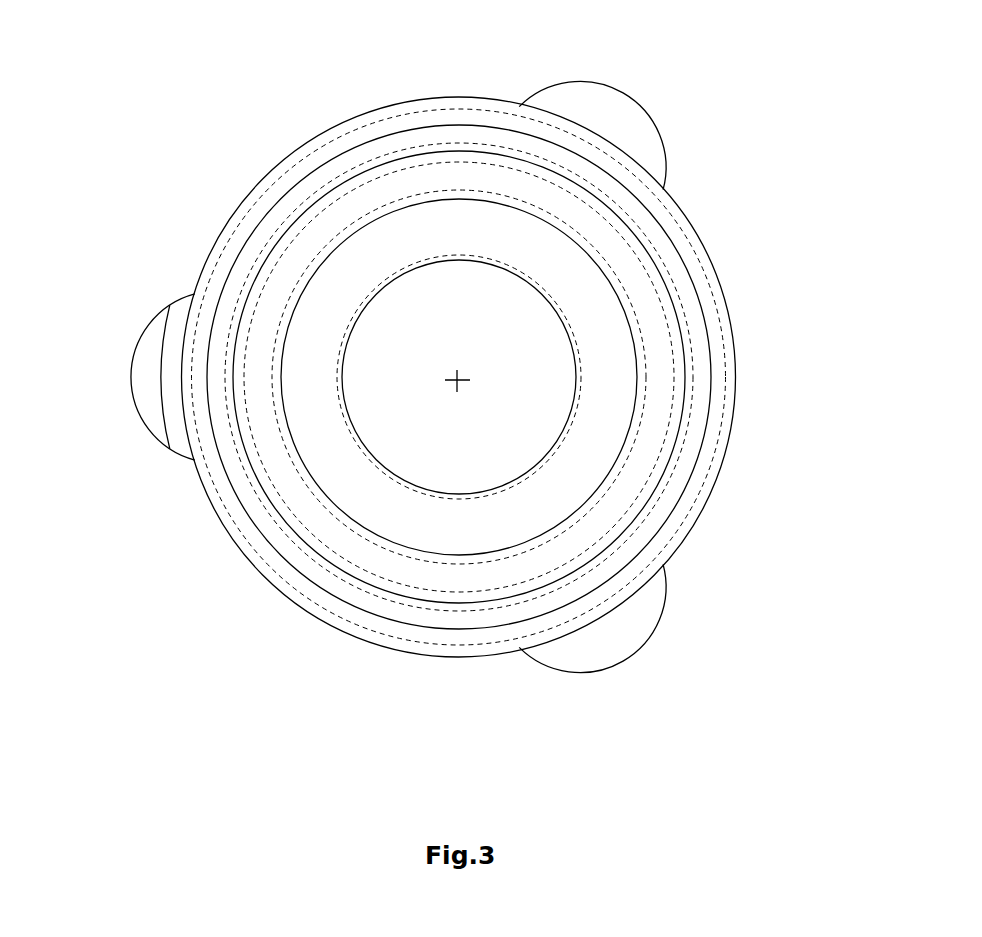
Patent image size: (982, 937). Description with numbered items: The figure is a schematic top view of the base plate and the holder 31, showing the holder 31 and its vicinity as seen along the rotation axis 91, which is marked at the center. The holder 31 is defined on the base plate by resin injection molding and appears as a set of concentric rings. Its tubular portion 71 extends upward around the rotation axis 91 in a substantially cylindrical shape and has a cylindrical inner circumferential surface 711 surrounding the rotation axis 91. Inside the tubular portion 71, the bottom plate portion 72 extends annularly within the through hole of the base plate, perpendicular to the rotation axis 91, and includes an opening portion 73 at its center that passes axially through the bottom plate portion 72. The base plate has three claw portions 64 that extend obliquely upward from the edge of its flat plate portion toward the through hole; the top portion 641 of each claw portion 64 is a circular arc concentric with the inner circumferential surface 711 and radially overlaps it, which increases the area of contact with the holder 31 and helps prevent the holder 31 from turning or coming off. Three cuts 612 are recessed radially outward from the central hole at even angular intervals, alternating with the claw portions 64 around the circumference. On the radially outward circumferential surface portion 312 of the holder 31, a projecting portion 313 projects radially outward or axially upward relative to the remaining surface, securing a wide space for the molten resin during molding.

The holder 31 is at (423, 377).
The circumferential surface portion 312 is at (215, 522).
The projecting portion 313 is at (178, 372).
The cuts 612 is at (612, 108).
The claw portions 64 is at (520, 361).
The top portion 641 is at (313, 287).
The tubular portion 71 is at (533, 377).
The inner circumferential surface 711 is at (362, 222).
The bottom plate portion 72 is at (600, 410).
The opening portion 73 is at (411, 445).
The rotation axis 91 is at (467, 370).